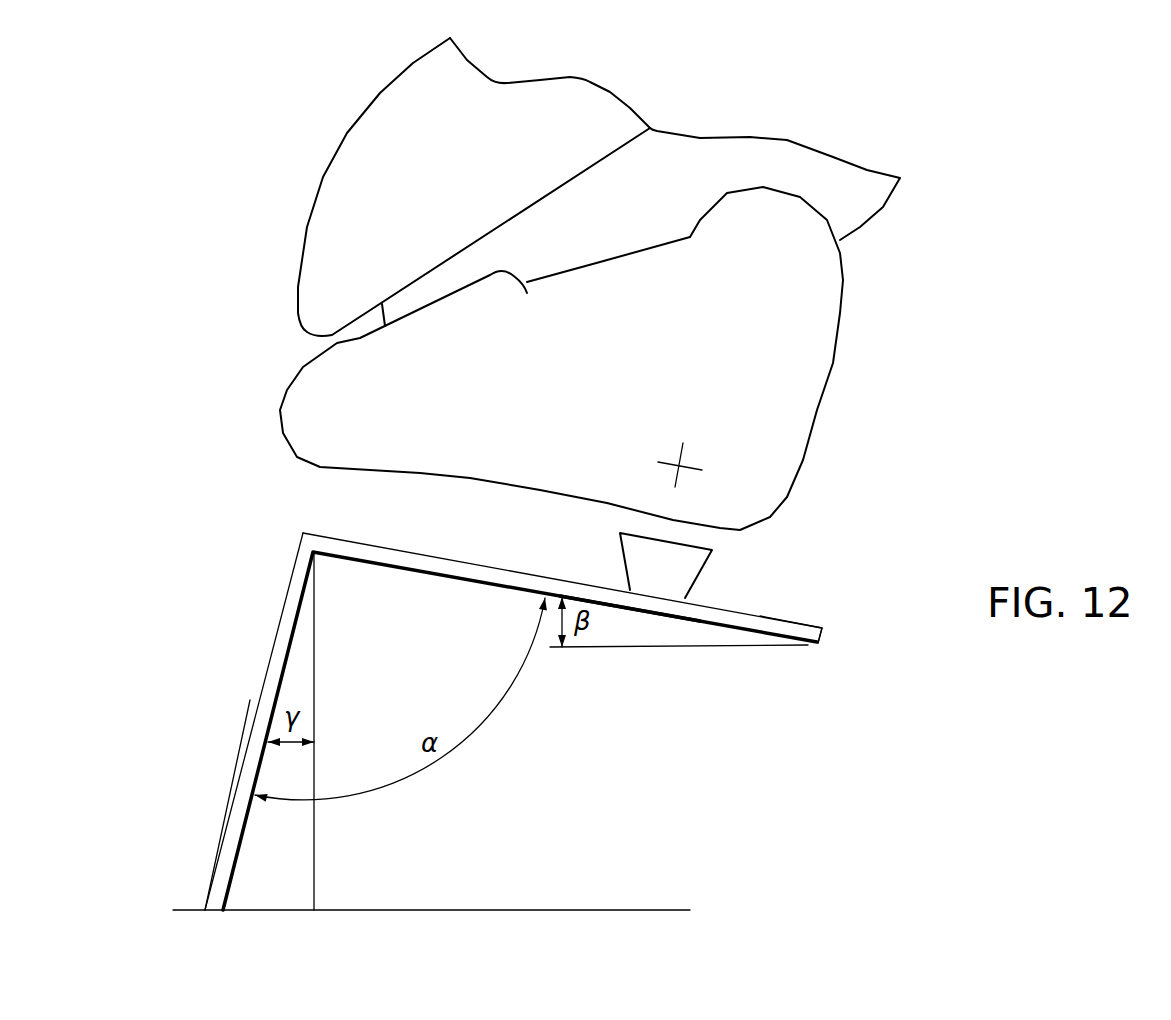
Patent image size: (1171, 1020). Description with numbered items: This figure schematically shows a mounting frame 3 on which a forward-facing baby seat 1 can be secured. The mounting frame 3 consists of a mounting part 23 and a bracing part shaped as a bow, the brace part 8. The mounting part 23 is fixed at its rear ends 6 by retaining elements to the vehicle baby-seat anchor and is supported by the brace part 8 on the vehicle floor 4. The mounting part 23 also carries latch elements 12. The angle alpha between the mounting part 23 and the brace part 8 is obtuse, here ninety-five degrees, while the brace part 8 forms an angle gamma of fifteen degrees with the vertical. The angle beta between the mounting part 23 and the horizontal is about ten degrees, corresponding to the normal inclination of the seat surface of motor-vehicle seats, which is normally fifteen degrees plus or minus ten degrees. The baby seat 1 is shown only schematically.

The baby seat 1 is at (790, 367).
The mounting frame 3 is at (267, 647).
The vehicle floor 4 is at (385, 910).
The rear ends 6 is at (820, 638).
The brace part 8 is at (228, 855).
The latch elements 12 is at (670, 567).
The mounting part 23 is at (462, 568).